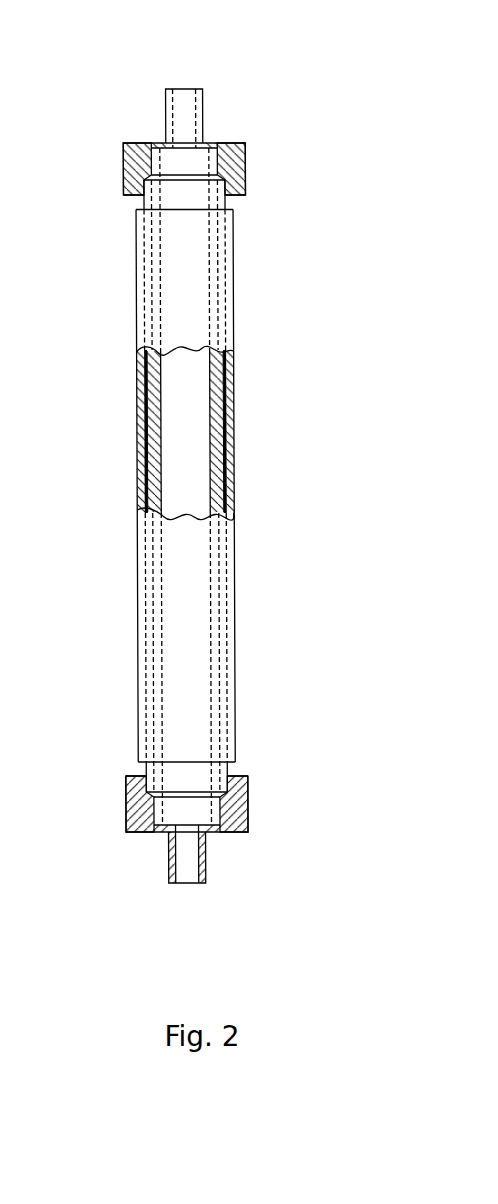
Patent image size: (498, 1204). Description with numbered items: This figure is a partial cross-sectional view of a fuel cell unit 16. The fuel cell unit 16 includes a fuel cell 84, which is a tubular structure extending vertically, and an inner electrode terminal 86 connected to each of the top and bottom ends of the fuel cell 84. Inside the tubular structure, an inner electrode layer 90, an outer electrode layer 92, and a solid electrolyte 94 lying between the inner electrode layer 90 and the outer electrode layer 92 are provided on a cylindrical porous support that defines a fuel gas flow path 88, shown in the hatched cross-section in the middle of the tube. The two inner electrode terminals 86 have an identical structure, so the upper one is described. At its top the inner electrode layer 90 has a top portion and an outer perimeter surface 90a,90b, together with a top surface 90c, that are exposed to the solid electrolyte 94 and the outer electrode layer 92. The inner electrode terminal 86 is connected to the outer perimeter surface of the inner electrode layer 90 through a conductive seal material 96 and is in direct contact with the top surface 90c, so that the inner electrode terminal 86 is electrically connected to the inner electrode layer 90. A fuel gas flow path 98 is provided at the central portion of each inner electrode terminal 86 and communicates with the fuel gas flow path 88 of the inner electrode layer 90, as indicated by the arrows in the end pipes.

The fuel cell unit 16 is at (295, 252).
The fuel cell 84 is at (232, 322).
The inner electrode terminal 86 is at (247, 152).
The fuel gas flow path 88 is at (172, 438).
The inner electrode layer 90 is at (213, 371).
The top of inner electrode layer and its outer perimeter surface 90a,90b is at (232, 177).
The top surface 90c is at (213, 142).
The outer electrode layer 92 is at (227, 436).
The solid electrolyte 94 is at (223, 398).
The conductive seal material 96 is at (133, 160).
The fuel gas flow path 98 is at (182, 110).